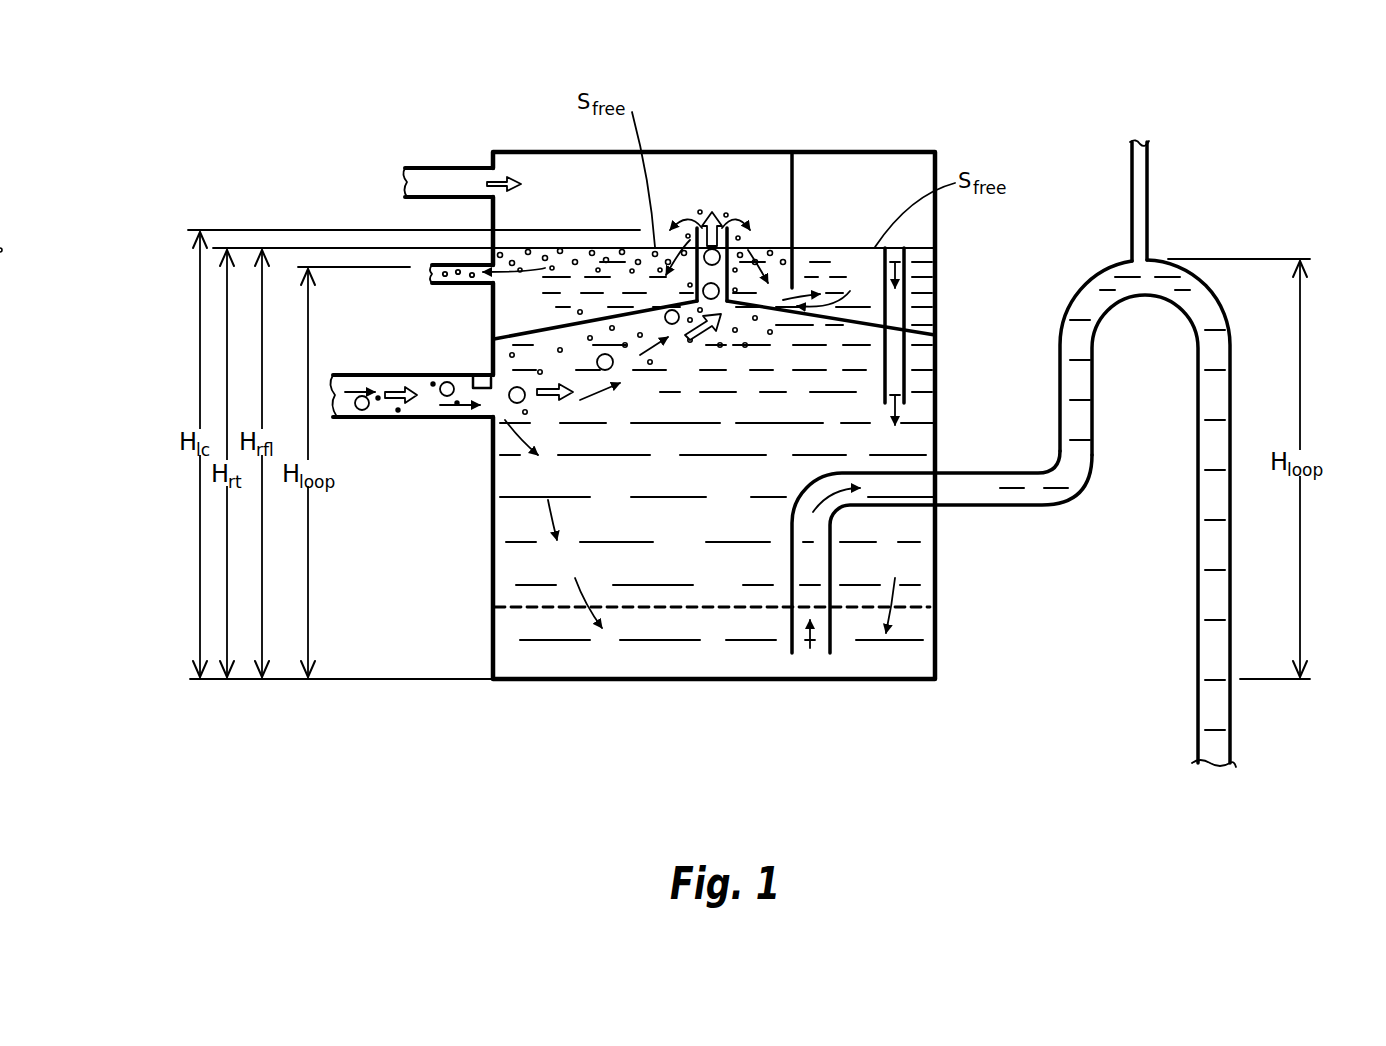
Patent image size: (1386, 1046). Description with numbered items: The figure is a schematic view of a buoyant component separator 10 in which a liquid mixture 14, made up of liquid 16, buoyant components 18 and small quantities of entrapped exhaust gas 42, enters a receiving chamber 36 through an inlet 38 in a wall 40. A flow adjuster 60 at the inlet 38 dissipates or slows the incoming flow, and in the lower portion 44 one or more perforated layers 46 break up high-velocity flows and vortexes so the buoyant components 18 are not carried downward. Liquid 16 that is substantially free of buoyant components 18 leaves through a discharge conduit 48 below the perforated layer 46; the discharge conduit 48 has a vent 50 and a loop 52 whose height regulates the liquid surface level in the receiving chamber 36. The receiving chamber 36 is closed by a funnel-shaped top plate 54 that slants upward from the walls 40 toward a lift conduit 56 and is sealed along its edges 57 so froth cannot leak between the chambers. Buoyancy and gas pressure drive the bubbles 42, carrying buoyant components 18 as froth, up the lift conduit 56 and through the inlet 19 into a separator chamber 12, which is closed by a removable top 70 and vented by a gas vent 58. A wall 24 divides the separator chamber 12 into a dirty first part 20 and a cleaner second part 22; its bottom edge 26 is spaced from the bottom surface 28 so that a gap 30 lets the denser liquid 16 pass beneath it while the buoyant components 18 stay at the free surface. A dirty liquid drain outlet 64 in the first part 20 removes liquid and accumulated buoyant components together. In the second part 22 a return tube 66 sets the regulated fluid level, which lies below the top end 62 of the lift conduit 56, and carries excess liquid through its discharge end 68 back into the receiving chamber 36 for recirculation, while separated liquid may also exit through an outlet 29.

The component separator 10 is at (997, 78).
The separator chamber 12 is at (672, 180).
The liquid mixture 14 is at (712, 228).
The liquid 16 is at (810, 298).
The buoyant components 18 is at (520, 294).
The inlet 19 is at (698, 230).
The first part 20 is at (560, 178).
The second part 22 is at (878, 180).
The wall 24 is at (800, 268).
The bottom edge 26 is at (797, 290).
The bottom surface 28 is at (862, 325).
The outlet 29 is at (920, 248).
The gap 30 is at (880, 293).
The receiving chamber 36 is at (498, 480).
The inlet 38 is at (372, 375).
The wall 40 is at (492, 553).
The entrapped exhaust gas 42 is at (502, 170).
The lower portion 44 is at (497, 638).
The perforated layers 46 is at (494, 607).
The discharge conduit 48 is at (833, 653).
The vent 50 is at (1149, 156).
The loop 52 is at (1112, 266).
The top plate 54 is at (536, 330).
The lift conduit 56 is at (745, 255).
The edges 57 is at (496, 338).
The gas vent 58 is at (437, 168).
The flow adjuster 60 is at (473, 380).
The top end 62 is at (726, 232).
The dirty liquid drain outlet 64 is at (450, 284).
The return tube 66 is at (905, 306).
The discharge end 68 is at (905, 402).
The top 70 is at (910, 153).